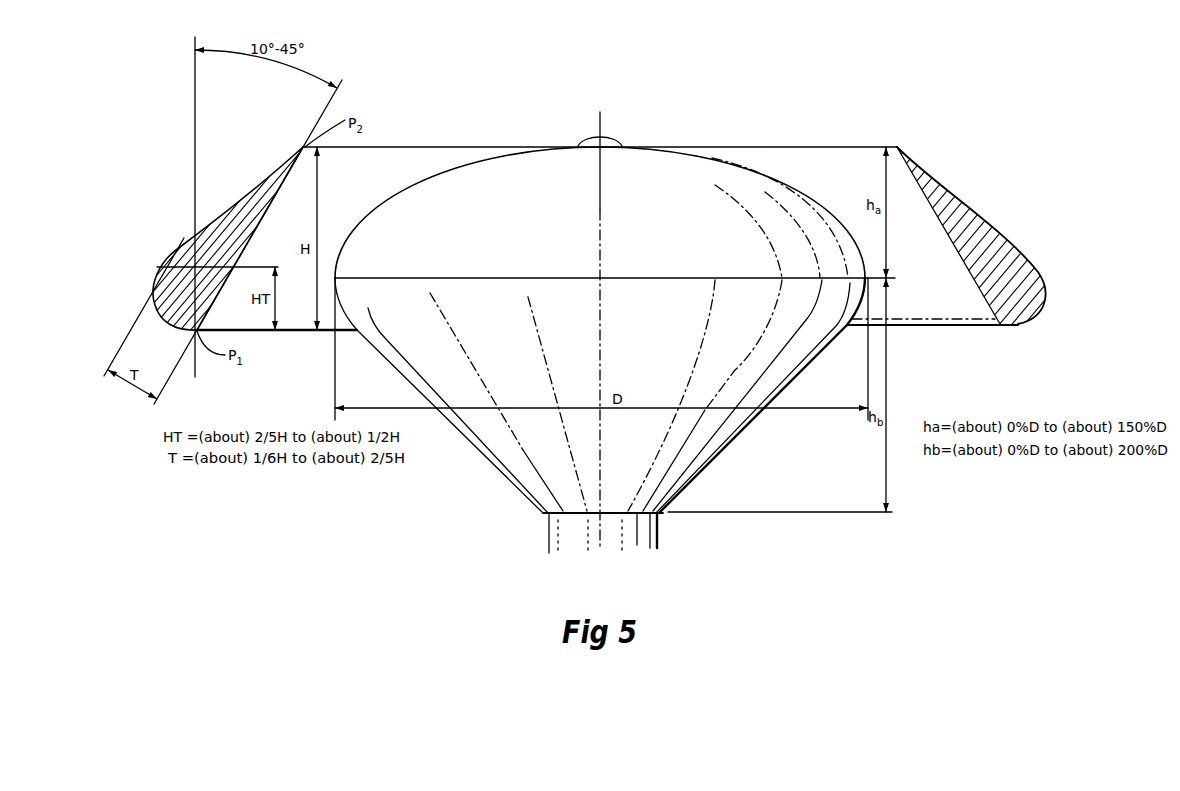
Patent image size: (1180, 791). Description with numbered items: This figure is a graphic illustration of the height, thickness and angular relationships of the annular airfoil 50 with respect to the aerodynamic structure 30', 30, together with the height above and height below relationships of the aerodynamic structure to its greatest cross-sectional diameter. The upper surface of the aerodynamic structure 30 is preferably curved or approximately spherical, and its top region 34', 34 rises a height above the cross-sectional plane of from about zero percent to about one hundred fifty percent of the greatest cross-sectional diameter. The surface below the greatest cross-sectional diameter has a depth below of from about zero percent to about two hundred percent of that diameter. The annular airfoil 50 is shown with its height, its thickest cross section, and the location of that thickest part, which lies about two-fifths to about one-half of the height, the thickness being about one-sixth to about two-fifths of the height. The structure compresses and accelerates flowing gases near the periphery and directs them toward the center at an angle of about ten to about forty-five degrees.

The hollow body / hopper 30' is at (607, 332).
The hollow body / hopper 30 is at (607, 332).
The top bump / inlet 34' is at (617, 131).
The top bump / inlet 34 is at (617, 131).
The side flange / wing 50 is at (938, 185).